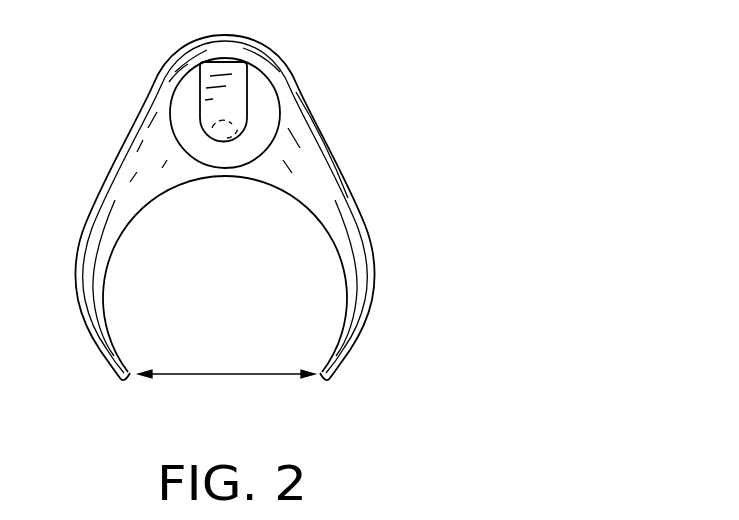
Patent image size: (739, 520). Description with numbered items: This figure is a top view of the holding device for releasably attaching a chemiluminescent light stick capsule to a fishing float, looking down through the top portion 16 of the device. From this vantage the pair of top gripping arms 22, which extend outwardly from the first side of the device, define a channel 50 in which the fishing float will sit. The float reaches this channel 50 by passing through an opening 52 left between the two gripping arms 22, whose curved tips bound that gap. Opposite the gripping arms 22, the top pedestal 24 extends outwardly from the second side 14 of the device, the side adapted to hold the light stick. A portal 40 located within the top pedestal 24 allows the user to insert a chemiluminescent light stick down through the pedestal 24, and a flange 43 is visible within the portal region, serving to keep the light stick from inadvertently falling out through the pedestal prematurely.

The second side 14 is at (348, 208).
The top portion 16 is at (348, 208).
The gripping arms 22 is at (93, 340).
The top pedestal 24 is at (148, 98).
The portal 40 is at (182, 93).
The flange 43 is at (237, 98).
The channel 50 is at (242, 258).
The opening 52 is at (223, 373).